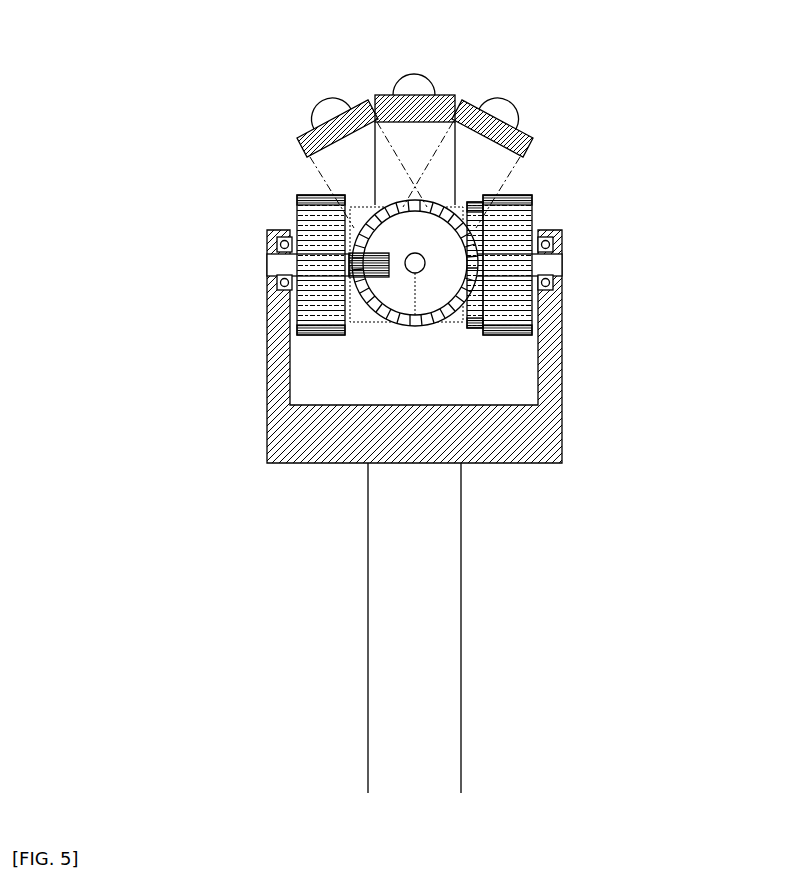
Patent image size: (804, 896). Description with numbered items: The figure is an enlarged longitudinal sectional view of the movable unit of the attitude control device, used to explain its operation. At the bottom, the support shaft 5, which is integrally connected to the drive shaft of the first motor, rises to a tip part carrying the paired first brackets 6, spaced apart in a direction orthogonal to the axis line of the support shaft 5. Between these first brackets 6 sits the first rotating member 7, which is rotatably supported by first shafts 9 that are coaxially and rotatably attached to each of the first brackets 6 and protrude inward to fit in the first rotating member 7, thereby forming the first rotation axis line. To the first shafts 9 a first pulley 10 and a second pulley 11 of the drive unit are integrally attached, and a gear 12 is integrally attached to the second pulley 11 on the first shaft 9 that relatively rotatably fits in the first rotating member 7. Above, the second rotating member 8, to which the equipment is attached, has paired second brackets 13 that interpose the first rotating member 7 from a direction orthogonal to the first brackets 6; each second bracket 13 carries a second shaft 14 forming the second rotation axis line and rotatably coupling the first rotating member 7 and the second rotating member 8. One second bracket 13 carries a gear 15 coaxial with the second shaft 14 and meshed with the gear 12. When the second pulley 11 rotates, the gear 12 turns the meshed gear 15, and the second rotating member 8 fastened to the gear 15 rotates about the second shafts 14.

The support shaft 5 is at (447, 622).
The first brackets 6 is at (270, 400).
The first rotating member 7 is at (365, 327).
The second rotating member 8 is at (443, 93).
The first shaft 9 is at (267, 263).
The first pulley 10 is at (300, 205).
The second pulley 11 is at (531, 205).
The gear 12 is at (470, 333).
The second brackets 13 is at (420, 140).
The second shaft 14 is at (410, 323).
The gear 15 is at (423, 327).